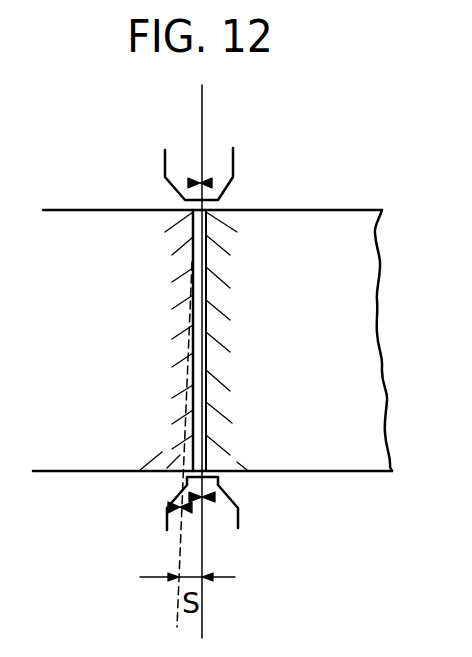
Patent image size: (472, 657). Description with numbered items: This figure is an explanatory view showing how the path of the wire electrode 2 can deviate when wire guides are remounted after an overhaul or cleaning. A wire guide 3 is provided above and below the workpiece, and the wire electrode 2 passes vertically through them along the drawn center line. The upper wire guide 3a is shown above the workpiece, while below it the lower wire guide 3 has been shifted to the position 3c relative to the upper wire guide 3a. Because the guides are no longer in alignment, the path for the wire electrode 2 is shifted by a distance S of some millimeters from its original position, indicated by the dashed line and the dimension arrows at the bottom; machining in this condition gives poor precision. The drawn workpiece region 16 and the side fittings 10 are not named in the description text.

The wire electrode 2 is at (202, 130).
The wire guide 3 is at (205, 503).
The upper wire guide 3a is at (208, 178).
The shifted position of lower wire guide 3c is at (167, 508).
The guide fitting legs 10 is at (165, 162).
The plate with guide hole 16 is at (338, 210).